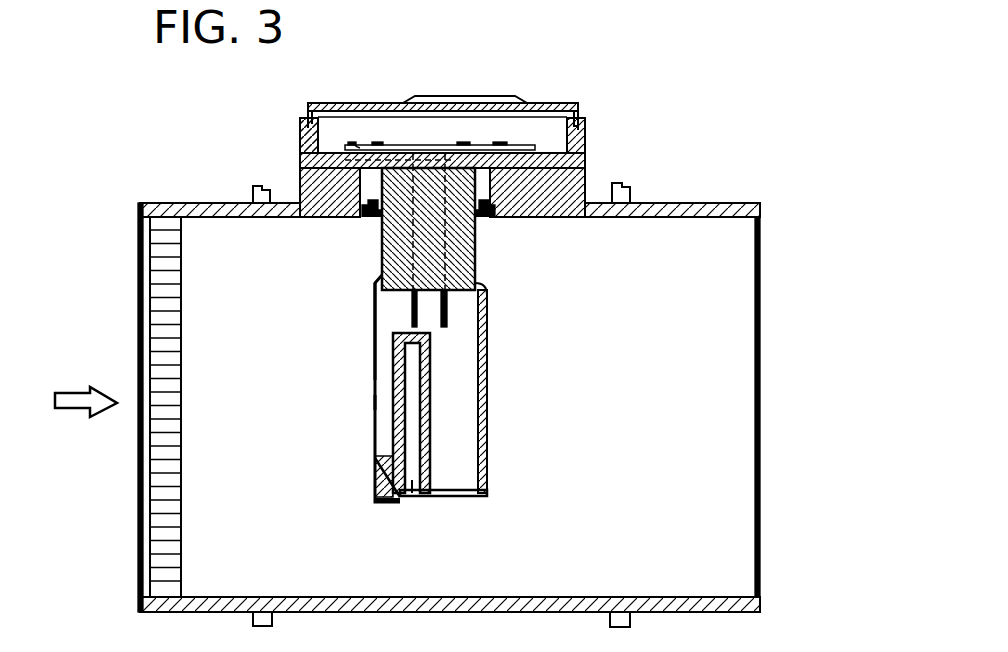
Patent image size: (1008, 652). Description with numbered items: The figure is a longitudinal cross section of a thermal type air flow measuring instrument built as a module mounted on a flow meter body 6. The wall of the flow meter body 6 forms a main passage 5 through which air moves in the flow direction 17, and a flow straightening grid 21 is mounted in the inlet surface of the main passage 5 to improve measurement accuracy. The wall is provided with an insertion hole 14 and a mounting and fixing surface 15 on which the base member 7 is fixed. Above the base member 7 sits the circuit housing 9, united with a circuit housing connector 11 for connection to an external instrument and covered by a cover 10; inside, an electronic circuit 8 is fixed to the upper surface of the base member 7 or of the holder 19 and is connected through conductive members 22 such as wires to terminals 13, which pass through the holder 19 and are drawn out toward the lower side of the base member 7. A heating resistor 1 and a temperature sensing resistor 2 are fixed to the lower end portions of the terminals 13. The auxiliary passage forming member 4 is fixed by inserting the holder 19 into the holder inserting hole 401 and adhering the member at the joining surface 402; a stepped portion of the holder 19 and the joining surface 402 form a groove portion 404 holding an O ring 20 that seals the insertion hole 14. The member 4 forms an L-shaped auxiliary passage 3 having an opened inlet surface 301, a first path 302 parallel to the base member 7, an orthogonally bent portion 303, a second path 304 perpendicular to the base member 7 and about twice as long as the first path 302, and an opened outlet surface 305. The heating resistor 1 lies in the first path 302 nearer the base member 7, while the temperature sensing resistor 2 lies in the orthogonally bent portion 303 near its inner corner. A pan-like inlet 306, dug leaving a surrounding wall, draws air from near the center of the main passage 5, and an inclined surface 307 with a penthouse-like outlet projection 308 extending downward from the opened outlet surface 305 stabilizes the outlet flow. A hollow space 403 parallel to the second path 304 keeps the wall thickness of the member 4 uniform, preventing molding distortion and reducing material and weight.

The heating resistor 1 is at (393, 312).
The temperature sensing resistor 2 is at (486, 340).
The auxiliary passage 3 is at (453, 440).
The auxiliary passage forming member 4 is at (487, 470).
The main passage 5 is at (707, 297).
The flow meter body 6 is at (717, 203).
The base member 7 is at (600, 160).
The electronic circuit 8 is at (525, 140).
The circuit housing 9 is at (587, 136).
The cover 10 is at (308, 108).
The circuit housing connector 11 is at (503, 97).
The terminals 13 is at (375, 398).
The insertion hole 14 is at (362, 215).
The mounting and fixing surface 15 is at (300, 157).
The flow direction 17 is at (72, 410).
The holder 19 is at (478, 255).
The O ring 20 is at (492, 213).
The flow straightening grid 21 is at (140, 543).
The conductive members 22 is at (353, 143).
The opened inlet surface 301 is at (380, 350).
The first path 302 is at (380, 315).
The orthogonally bent portion 303 is at (487, 318).
The second path 304 is at (487, 382).
The opened outlet surface 305 is at (467, 497).
The pan-like inlet 306 is at (388, 438).
The inclined surface 307 is at (375, 495).
The outlet projection 308 is at (403, 502).
The holder inserting hole 401 is at (378, 268).
The joining surface 402 is at (387, 157).
The hollow space 403 is at (410, 495).
The groove portion 404 is at (483, 157).